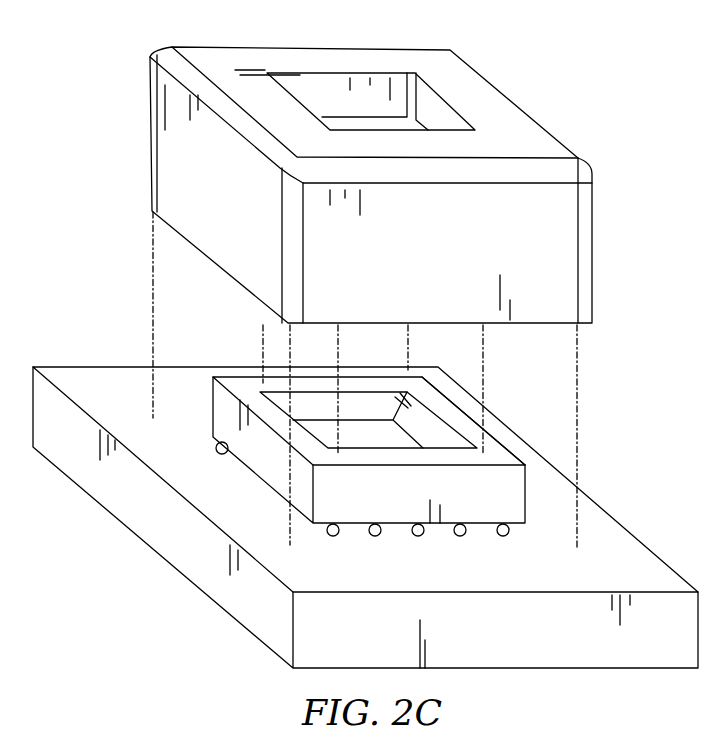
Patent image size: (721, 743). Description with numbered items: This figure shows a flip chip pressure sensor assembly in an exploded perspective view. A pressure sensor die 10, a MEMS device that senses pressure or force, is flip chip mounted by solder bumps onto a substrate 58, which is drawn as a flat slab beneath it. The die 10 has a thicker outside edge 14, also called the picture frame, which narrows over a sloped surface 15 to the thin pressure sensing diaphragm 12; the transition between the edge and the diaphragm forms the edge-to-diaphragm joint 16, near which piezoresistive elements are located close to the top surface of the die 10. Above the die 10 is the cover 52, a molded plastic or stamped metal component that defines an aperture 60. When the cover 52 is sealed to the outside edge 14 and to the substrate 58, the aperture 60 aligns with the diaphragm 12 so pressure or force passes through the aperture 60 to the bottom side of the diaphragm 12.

The pressure sensor die 10 is at (265, 462).
The pressure sensing diaphragm 12 is at (412, 446).
The outside edge 14 is at (505, 448).
The sloped surface 15 is at (400, 393).
The edge-to-diaphragm joint 16 is at (455, 448).
The cover 52 is at (592, 238).
The substrate 58 is at (138, 533).
The aperture 60 is at (312, 90).